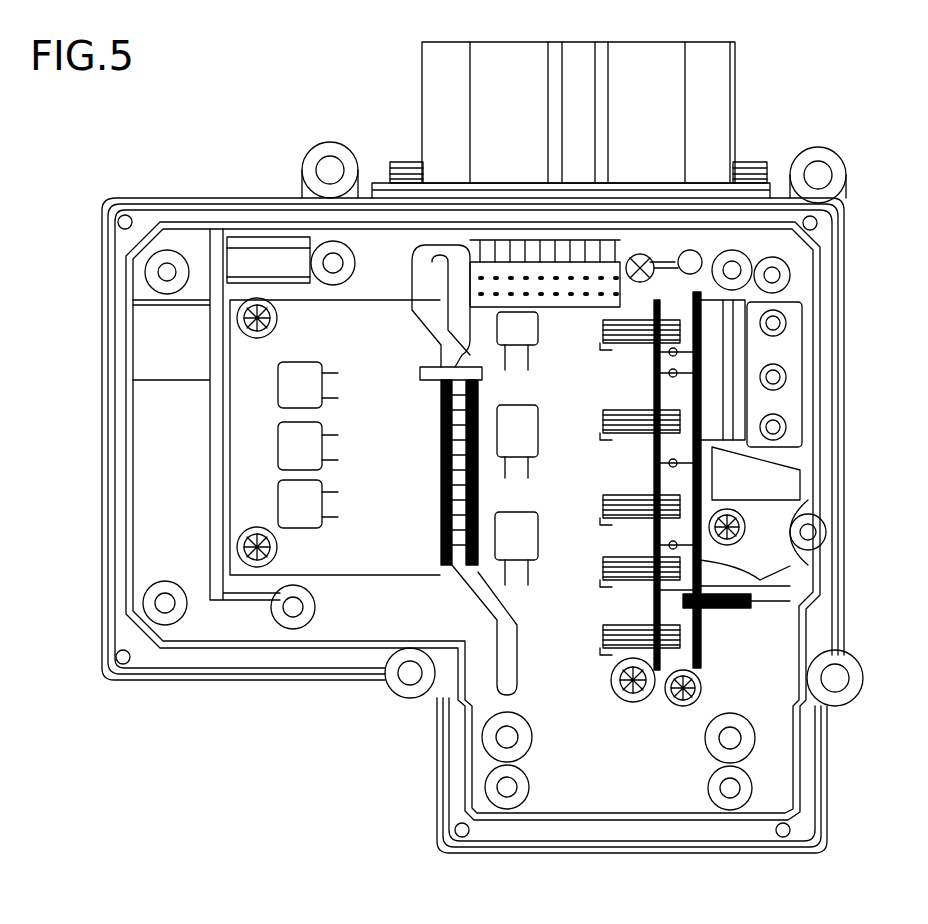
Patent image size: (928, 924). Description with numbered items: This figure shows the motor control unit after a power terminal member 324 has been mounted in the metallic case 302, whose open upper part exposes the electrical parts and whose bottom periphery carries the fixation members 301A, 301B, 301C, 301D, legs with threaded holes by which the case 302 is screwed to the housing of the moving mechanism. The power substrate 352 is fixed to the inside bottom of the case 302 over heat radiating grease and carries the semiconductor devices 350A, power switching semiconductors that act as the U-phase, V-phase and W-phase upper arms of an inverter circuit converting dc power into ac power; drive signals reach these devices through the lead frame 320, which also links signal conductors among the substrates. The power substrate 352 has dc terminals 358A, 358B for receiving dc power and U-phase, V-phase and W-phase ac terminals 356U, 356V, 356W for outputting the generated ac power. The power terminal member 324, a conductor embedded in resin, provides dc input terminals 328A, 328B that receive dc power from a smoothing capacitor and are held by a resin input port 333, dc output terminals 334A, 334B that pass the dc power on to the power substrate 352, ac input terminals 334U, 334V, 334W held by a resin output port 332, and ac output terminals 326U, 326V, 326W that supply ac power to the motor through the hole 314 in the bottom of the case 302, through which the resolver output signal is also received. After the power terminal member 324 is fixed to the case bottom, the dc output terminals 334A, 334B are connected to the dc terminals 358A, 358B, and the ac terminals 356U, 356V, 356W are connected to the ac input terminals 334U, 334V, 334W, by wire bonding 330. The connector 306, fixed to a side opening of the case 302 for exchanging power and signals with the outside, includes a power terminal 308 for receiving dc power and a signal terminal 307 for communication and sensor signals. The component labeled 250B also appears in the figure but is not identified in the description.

The case 302 is at (155, 198).
The power substrate 352 is at (300, 310).
The fixation member 301A is at (820, 176).
The fixation member 301B is at (838, 678).
The fixation member 301C is at (330, 168).
The fixation member 301D is at (408, 676).
The connector 306 is at (420, 50).
The signal terminal 307 is at (490, 290).
The power terminal 308 is at (700, 265).
The lead frame 320 is at (440, 520).
The capacitors 250B is at (300, 515).
The semiconductor device 350A is at (517, 350).
The U-phase ac terminal 356U is at (603, 330).
The V-phase ac terminal 356V is at (603, 420).
The W-phase ac terminal 356W is at (603, 504).
The dc terminal 358A is at (603, 634).
The dc terminal 358B is at (603, 564).
The wire bonding 330 is at (613, 345).
The dc output terminal 334A is at (702, 658).
The dc output terminal 334B is at (660, 597).
The U-phase ac input terminal 334U is at (655, 357).
The V-phase ac input terminal 334V is at (655, 380).
The W-phase ac input terminal 334W is at (660, 472).
The power terminal member 324 is at (735, 398).
The hole 314 is at (790, 350).
The U-phase ac output terminal 326U is at (787, 323).
The V-phase ac output terminal 326V is at (787, 377).
The W-phase ac output terminal 326W is at (787, 427).
The resin output port 332 is at (738, 450).
The resin input port 333 is at (760, 565).
The dc input terminal 328A is at (790, 601).
The dc input terminal 328B is at (790, 588).